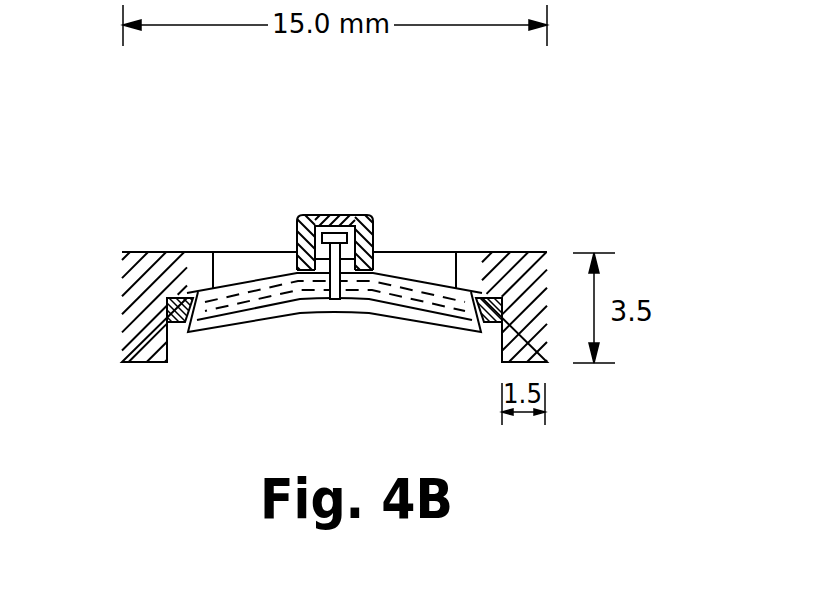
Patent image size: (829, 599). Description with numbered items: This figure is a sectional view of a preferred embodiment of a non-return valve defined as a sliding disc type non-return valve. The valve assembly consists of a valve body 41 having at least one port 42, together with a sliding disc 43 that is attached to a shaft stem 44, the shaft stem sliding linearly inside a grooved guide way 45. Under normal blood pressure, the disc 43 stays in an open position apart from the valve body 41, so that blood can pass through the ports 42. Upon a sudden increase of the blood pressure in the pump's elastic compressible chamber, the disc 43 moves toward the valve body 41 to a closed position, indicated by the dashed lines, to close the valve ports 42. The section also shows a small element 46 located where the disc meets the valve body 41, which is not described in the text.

The valve body 41 is at (463, 258).
The port 42 is at (250, 253).
The sliding disc 43 is at (366, 289).
The shaft stem 44 is at (334, 233).
The grooved guide way 45 is at (353, 215).
The sealing ring 46 is at (173, 326).